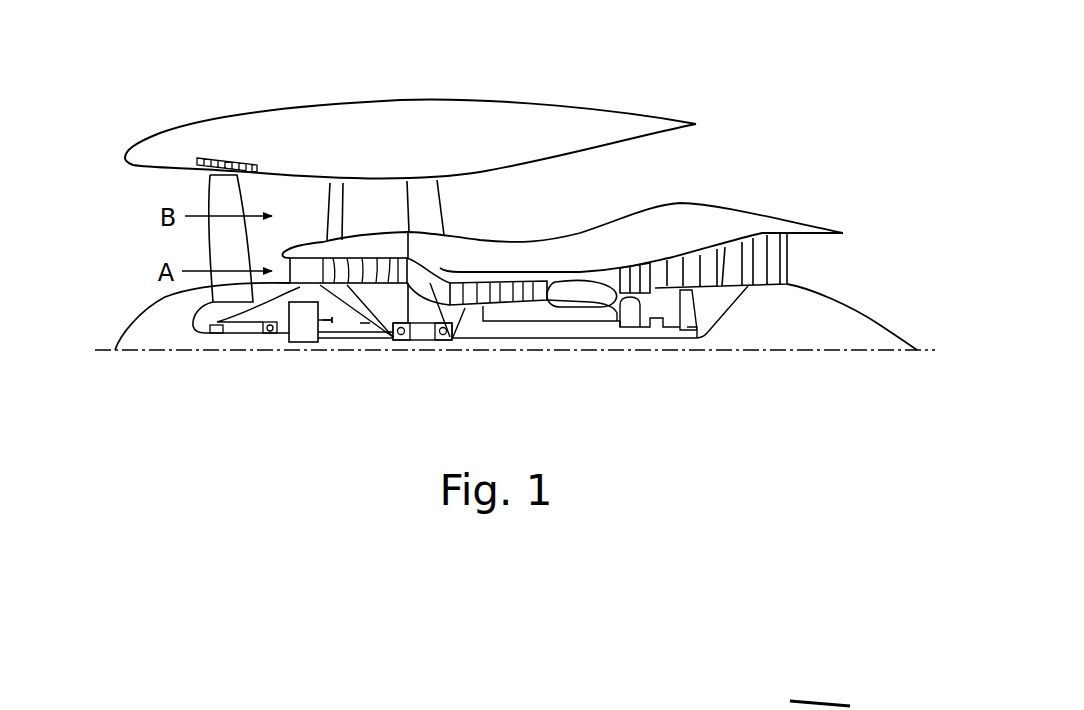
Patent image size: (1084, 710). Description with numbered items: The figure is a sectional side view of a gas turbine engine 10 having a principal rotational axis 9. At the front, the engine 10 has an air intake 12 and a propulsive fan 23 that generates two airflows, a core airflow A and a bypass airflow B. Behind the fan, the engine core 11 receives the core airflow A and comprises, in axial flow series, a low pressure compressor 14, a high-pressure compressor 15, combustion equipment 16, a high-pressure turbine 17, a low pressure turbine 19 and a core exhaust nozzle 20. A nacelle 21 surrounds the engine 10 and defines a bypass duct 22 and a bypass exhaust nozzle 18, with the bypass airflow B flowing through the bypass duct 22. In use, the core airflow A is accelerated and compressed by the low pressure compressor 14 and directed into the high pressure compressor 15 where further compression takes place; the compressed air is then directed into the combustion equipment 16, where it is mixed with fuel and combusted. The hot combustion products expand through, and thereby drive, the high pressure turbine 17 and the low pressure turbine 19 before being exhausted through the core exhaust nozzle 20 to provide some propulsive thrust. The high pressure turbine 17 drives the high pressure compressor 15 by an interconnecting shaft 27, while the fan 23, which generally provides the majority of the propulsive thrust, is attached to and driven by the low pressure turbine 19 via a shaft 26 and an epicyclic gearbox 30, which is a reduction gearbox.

The principal rotational axis 9 is at (810, 352).
The gas turbine engine 10 is at (184, 120).
The core 11 is at (588, 262).
The air intake 12 is at (140, 190).
The low pressure compressor 14 is at (369, 266).
The high-pressure compressor 15 is at (508, 292).
The combustion equipment 16 is at (571, 297).
The high-pressure turbine 17 is at (633, 273).
The bypass exhaust nozzle 18 is at (795, 120).
The low pressure turbine 19 is at (757, 272).
The core exhaust nozzle 20 is at (847, 270).
The nacelle 21 is at (424, 115).
The bypass duct 22 is at (665, 165).
The propulsive fan 23 is at (214, 254).
The shaft 26 is at (470, 342).
The interconnecting shaft 27 is at (531, 340).
The epicyclic gearbox 30 is at (302, 340).